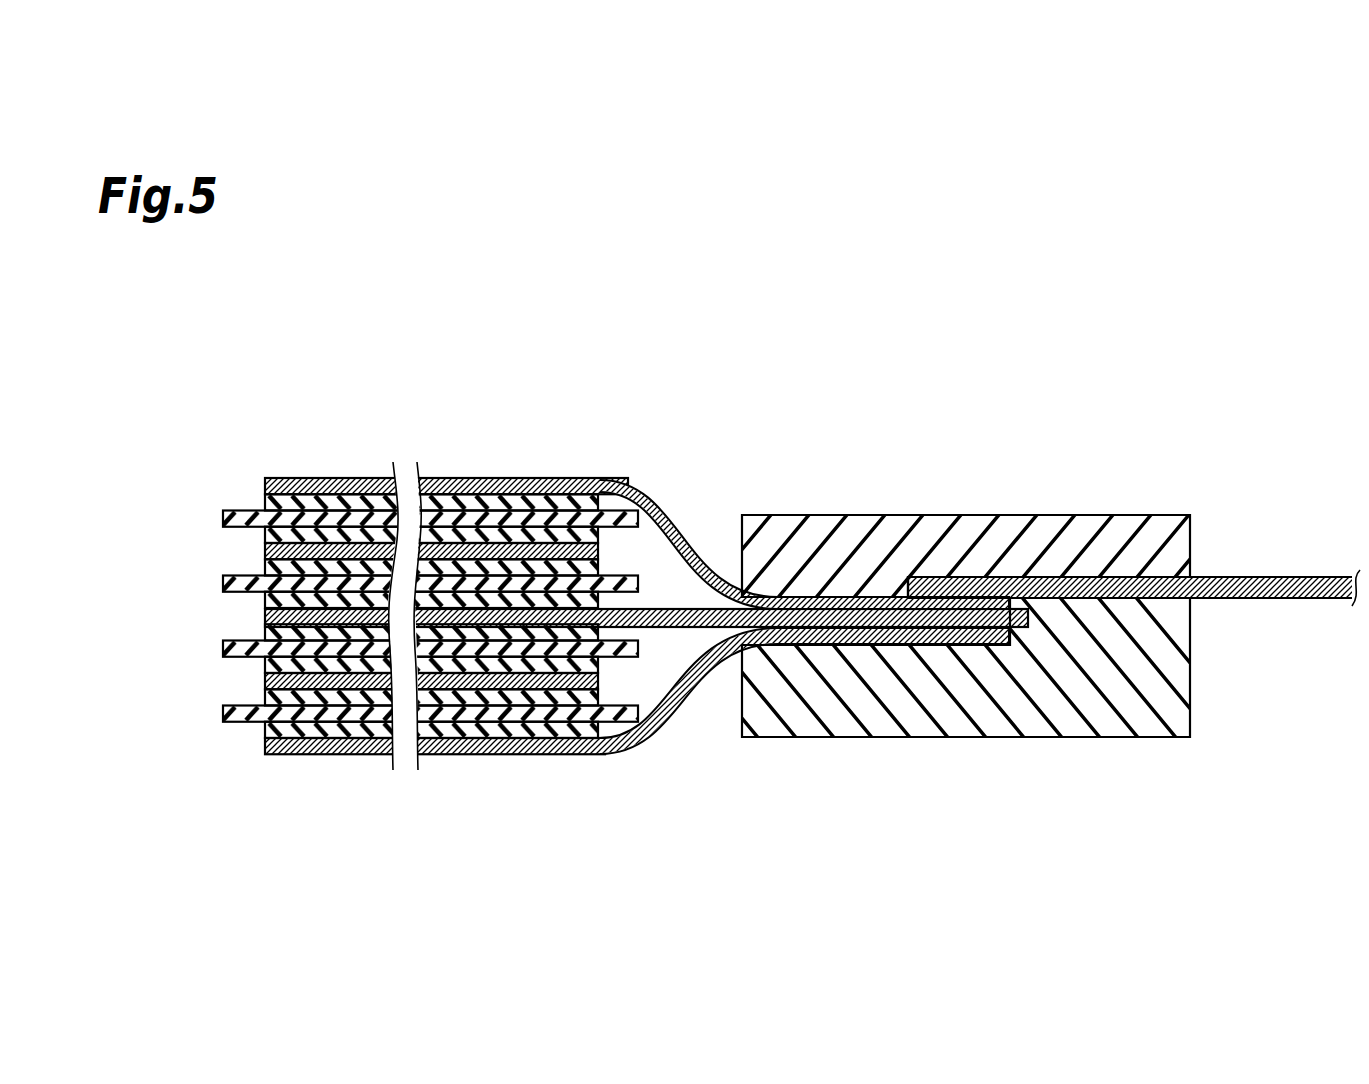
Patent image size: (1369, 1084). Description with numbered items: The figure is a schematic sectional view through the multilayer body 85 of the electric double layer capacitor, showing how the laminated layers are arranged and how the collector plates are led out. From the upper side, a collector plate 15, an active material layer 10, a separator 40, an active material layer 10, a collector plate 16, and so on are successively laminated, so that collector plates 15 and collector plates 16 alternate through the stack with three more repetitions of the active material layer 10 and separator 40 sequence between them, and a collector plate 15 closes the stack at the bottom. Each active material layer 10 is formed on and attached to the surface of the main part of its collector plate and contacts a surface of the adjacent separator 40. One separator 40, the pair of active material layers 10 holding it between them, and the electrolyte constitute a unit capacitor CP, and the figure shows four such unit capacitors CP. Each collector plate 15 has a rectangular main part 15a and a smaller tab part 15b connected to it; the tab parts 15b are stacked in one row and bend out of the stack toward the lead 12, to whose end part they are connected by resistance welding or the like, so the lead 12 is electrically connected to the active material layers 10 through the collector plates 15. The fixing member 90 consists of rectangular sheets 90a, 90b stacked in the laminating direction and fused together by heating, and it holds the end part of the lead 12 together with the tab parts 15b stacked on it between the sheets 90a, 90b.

The multilayer body 85 is at (540, 374).
The unit capacitor CP is at (143, 422).
The active material layer 10 is at (265, 500).
The separator 40 is at (224, 512).
The collector plate 15 is at (562, 612).
The main part 15a is at (552, 608).
The tab part 15b is at (688, 505).
The collector plate 16 is at (265, 549).
The fixing member 90 is at (1000, 607).
The rectangular sheet 90a is at (1192, 538).
The rectangular sheet 90b is at (1192, 678).
The lead 12 is at (1283, 602).